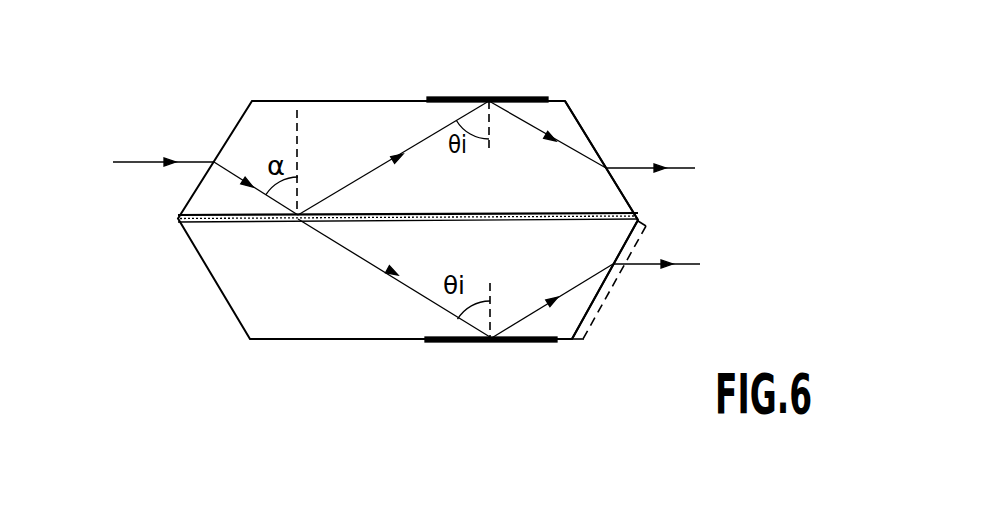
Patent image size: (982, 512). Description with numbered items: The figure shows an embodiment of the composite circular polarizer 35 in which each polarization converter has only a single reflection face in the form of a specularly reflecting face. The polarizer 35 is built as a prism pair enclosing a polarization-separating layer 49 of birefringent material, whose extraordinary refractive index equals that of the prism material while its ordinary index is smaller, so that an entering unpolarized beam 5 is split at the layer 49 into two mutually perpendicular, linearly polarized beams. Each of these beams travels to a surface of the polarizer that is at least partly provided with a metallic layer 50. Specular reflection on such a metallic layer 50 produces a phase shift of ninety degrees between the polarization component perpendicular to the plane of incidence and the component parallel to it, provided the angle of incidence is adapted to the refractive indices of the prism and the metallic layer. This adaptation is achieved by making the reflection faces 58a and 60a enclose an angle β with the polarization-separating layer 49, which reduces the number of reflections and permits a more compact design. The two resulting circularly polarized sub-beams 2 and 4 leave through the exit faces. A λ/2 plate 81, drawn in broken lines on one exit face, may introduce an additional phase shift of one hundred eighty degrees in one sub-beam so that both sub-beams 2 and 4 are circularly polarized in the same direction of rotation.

The input light beam 5 is at (137, 162).
The layer of birefringent material 49 is at (177, 221).
The metallic layer 50 is at (517, 97).
The reflection face 58a is at (560, 100).
The sub-beam 2 is at (683, 167).
The λ/2 plate 81 is at (647, 233).
The sub-beam 4 is at (653, 268).
The reflection face 60a is at (568, 342).
The composite circular polarizer 35 is at (160, 338).